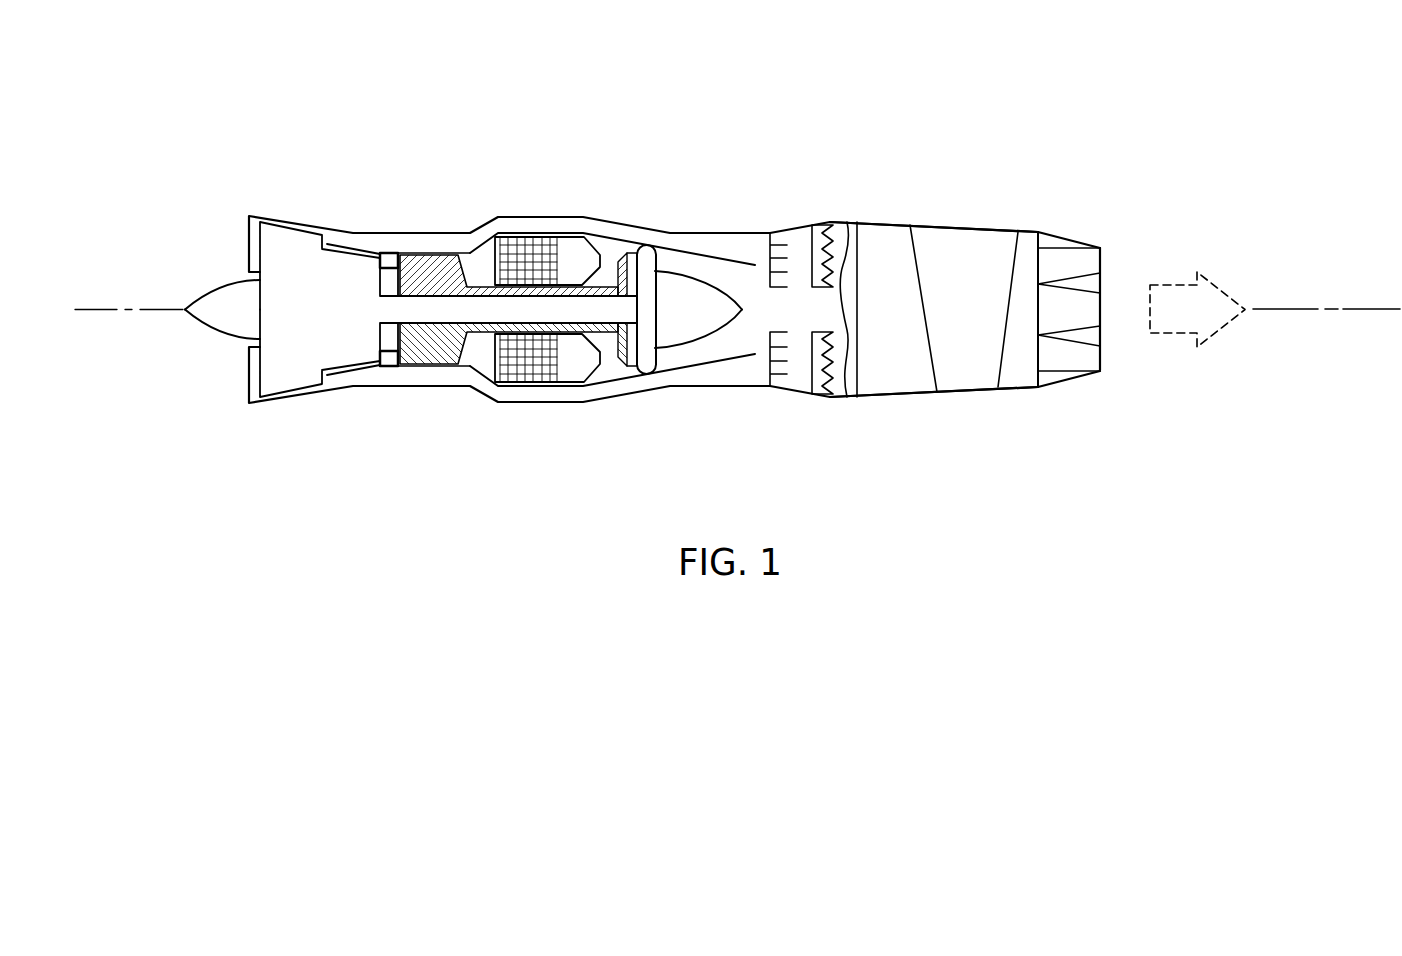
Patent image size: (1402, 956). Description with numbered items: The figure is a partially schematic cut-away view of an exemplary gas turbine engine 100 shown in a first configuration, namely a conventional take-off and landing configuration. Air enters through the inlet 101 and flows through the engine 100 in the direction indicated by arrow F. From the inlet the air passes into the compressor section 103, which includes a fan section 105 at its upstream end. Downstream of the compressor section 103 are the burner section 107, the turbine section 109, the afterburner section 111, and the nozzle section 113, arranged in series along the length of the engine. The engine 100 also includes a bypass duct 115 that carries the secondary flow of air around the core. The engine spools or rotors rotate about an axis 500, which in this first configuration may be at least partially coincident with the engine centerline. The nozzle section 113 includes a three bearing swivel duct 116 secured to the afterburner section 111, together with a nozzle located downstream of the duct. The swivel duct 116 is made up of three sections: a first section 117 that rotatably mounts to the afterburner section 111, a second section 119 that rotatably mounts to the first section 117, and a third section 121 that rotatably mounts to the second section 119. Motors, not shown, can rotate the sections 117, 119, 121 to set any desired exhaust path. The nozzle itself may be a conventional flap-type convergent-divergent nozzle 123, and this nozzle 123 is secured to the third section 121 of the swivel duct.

The engine 100 is at (1132, 133).
The inlet 101 is at (238, 375).
The compressor section 103 is at (474, 274).
The fan section 105 is at (290, 377).
The burner section 107 is at (535, 252).
The turbine section 109 is at (675, 265).
The afterburner section 111 is at (857, 202).
The nozzle section 113 is at (1102, 243).
The bypass duct 115 is at (638, 390).
The three bearing swivel duct 116 is at (926, 418).
The first section 117 is at (898, 397).
The second section 119 is at (975, 395).
The third section 121 is at (1020, 392).
The convergent-divergent nozzle 123 is at (1090, 264).
The axis 500 is at (1285, 308).
The arrow F is at (1210, 318).